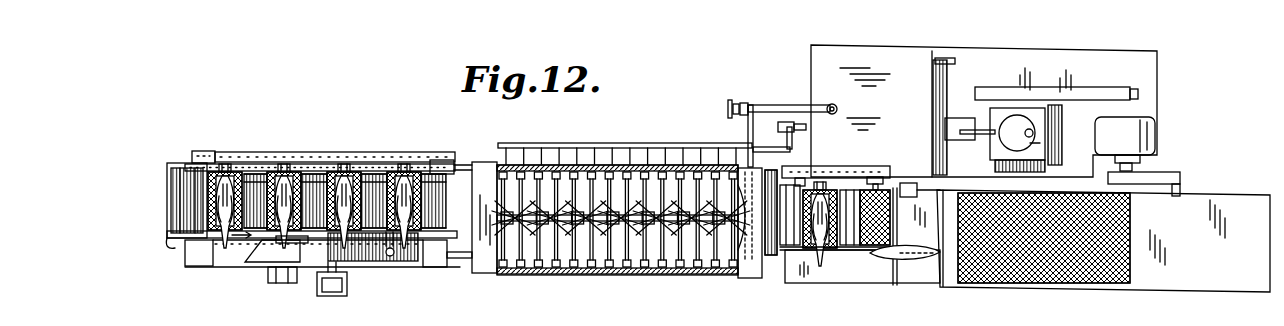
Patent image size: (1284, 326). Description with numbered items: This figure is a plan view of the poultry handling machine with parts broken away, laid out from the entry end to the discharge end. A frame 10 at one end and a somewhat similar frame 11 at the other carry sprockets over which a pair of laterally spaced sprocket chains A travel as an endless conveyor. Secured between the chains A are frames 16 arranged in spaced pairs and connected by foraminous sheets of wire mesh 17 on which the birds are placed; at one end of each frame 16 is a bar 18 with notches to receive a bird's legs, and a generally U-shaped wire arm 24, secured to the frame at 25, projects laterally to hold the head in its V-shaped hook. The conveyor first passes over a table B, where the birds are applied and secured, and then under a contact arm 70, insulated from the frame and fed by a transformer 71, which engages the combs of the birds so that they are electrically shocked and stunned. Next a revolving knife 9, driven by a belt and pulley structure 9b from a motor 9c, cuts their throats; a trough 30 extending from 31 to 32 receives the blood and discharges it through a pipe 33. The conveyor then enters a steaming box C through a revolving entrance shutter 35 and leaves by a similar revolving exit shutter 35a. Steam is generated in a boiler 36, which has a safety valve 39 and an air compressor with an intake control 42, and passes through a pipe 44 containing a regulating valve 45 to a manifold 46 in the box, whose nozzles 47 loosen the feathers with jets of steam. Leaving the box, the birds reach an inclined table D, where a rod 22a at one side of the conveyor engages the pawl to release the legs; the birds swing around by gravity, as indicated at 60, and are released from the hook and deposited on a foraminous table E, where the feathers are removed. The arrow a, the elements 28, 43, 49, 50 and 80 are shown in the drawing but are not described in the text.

The bar 18 is at (213, 160).
The table B is at (266, 158).
The wire mesh 17 is at (355, 170).
The trough end 31 is at (326, 165).
The sprocket chains A is at (378, 170).
The frames 16 is at (428, 160).
The revolving entrance shutter 35 is at (470, 165).
The trough end 32 is at (466, 273).
The base block 28 is at (222, 250).
The frame 10 is at (228, 264).
The direction of travel a is at (241, 242).
The contact arm 70 is at (308, 262).
The transformer 71 is at (268, 278).
The belt and pulley structure 9b is at (322, 296).
The motor 9c is at (338, 298).
The revolving knife 9 is at (348, 252).
The trough 30 is at (373, 252).
The pipe 33 is at (391, 258).
The wire arm 24 is at (394, 248).
The securing point 25 is at (386, 258).
The steaming box C is at (678, 278).
The top rail 50 is at (634, 147).
The hangers 49 is at (614, 150).
The nozzles 47 is at (570, 258).
The manifold 46 is at (633, 262).
The revolving exit shutter 35a is at (768, 272).
The regulating valve 45 is at (737, 102).
The pipe 44 is at (781, 105).
The safety valve 39 is at (838, 110).
The branch pipe 43 is at (782, 147).
The boiler 36 is at (984, 111).
The intake control 42 is at (1040, 128).
The motor 80 is at (1157, 131).
The frame 11 is at (822, 170).
The rod 22a is at (843, 178).
The table D is at (845, 271).
The swinging bird 60 is at (912, 262).
The table E is at (1092, 275).